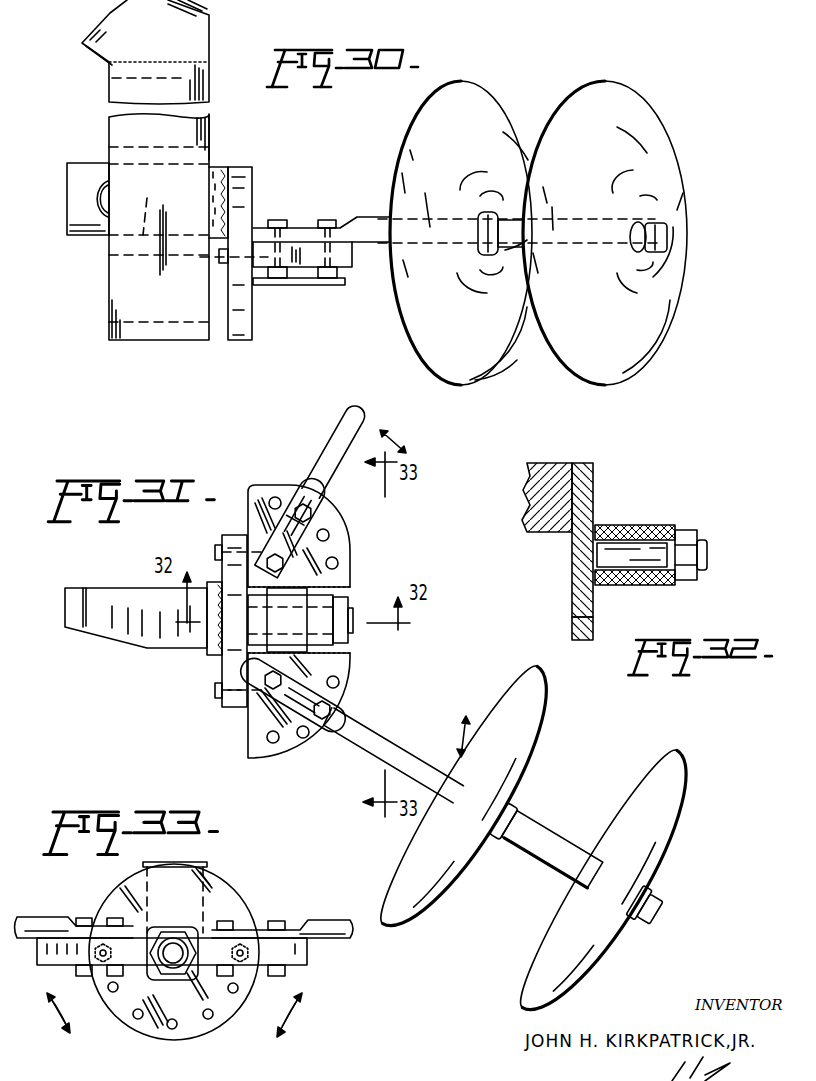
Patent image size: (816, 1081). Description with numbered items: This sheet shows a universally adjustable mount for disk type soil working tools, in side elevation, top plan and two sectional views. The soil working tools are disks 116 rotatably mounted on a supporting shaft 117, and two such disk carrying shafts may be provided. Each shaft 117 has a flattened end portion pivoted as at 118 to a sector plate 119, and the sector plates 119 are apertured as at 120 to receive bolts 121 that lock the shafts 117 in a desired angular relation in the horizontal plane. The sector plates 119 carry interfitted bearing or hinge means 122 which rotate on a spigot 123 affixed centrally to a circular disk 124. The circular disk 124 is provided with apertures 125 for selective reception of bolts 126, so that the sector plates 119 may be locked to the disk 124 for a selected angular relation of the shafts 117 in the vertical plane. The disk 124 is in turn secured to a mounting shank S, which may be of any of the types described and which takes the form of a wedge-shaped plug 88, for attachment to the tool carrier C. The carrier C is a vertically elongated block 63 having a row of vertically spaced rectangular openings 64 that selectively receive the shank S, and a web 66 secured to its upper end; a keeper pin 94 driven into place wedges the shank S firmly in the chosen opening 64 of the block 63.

In FIG. 30, the web 66 is at (195, 44).
In FIG. 30, the block 63 is at (123, 128).
In FIG. 30, the tool carrier C is at (214, 121).
In FIG. 30, the shank S is at (80, 180).
In FIG. 31, the shank S is at (118, 586).
In FIG. 32, the shank S is at (547, 465).
In FIG. 33, the shank S is at (206, 864).
In FIG. 30, the keeper pin 94 is at (92, 200).
In FIG. 30, the openings 64 is at (148, 205).
In FIG. 30, the pivot 118 is at (276, 220).
In FIG. 31, the pivot 118 is at (271, 690).
In FIG. 33, the pivot 118 is at (226, 917).
In FIG. 30, the bolts 121 is at (330, 220).
In FIG. 31, the bolts 121 is at (332, 712).
In FIG. 33, the bolts 121 is at (282, 917).
In FIG. 30, the supporting shaft 117 is at (372, 227).
In FIG. 31, the supporting shaft 117 is at (345, 448).
In FIG. 33, the supporting shaft 117 is at (30, 925).
In FIG. 30, the bolts 126 is at (220, 258).
In FIG. 31, the bolts 126 is at (216, 690).
In FIG. 33, the bolts 126 is at (250, 970).
In FIG. 30, the sector plates 119 is at (303, 253).
In FIG. 31, the sector plates 119 is at (287, 748).
In FIG. 33, the sector plates 119 is at (308, 956).
In FIG. 30, the bearing or hinge means 122 is at (308, 285).
In FIG. 31, the bearing or hinge means 122 is at (303, 620).
In FIG. 32, the bearing or hinge means 122 is at (664, 525).
In FIG. 33, the bearing or hinge means 122 is at (177, 980).
In FIG. 30, the circular disk 124 is at (243, 340).
In FIG. 31, the circular disk 124 is at (233, 535).
In FIG. 32, the circular disk 124 is at (572, 593).
In FIG. 33, the circular disk 124 is at (228, 881).
In FIG. 30, the disks 116 is at (570, 115).
In FIG. 31, the disks 116 is at (657, 800).
In FIG. 31, the plug 88 is at (131, 630).
In FIG. 31, the spigot 123 is at (355, 625).
In FIG. 32, the spigot 123 is at (623, 553).
In FIG. 33, the spigot 123 is at (171, 960).
In FIG. 31, the apertures 120 is at (340, 680).
In FIG. 32, the apertures 125 is at (582, 621).